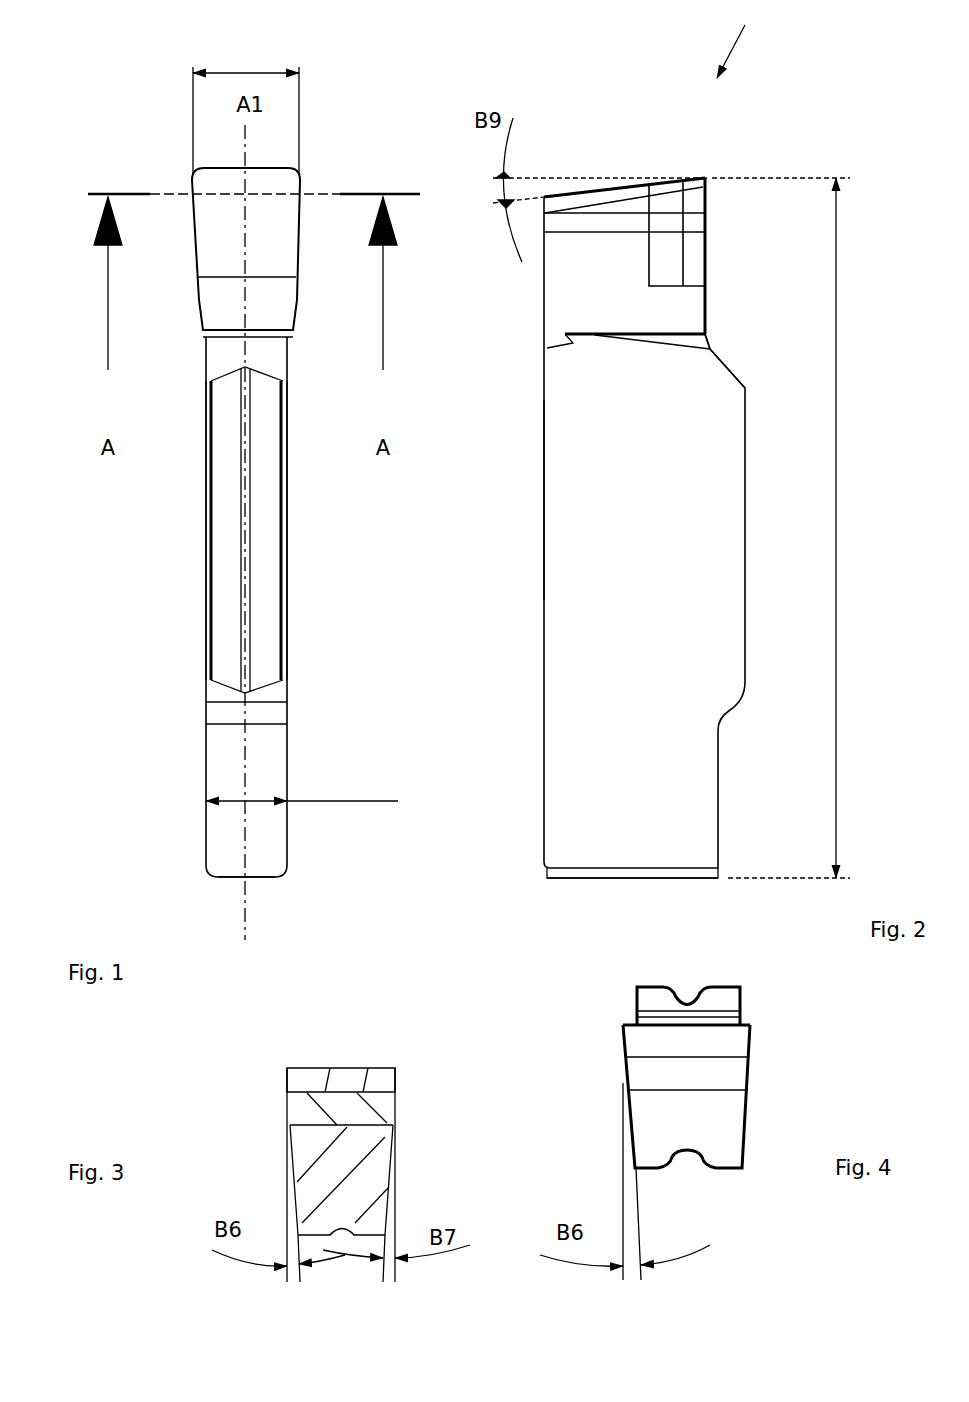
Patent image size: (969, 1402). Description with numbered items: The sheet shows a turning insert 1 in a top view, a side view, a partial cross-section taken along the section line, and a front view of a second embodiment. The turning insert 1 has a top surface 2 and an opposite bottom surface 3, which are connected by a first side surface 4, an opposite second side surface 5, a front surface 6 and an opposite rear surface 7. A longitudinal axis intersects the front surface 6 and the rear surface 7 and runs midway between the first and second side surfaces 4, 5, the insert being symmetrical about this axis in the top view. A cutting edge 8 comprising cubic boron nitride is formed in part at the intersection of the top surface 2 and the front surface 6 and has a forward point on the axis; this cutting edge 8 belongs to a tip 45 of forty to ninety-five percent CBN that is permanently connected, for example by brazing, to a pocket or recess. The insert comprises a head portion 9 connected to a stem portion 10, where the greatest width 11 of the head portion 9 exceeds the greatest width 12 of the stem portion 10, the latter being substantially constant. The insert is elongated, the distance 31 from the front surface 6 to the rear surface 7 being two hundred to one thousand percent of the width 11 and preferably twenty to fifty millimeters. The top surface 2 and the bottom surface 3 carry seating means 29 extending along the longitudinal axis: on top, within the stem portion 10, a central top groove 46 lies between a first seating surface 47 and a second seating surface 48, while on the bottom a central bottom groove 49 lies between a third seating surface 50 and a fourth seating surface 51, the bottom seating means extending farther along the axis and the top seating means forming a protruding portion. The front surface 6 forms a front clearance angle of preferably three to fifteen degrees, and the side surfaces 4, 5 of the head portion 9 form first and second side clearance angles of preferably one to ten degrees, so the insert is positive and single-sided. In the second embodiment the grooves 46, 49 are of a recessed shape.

In FIG. 1, the turning insert 1 is at (130, 130).
In FIG. 1, the top surface 2 is at (248, 607).
In FIG. 2, the top surface 2 is at (745, 533).
In FIG. 4, the top surface 2 is at (708, 965).
In FIG. 2, the bottom surface 3 is at (543, 494).
In FIG. 4, the bottom surface 3 is at (727, 1225).
In FIG. 1, the first side surface 4 is at (288, 521).
In FIG. 3, the first side surface 4 is at (288, 1132).
In FIG. 4, the first side surface 4 is at (625, 1063).
In FIG. 1, the second side surface 5 is at (203, 563).
In FIG. 2, the second side surface 5 is at (591, 500).
In FIG. 3, the second side surface 5 is at (395, 1142).
In FIG. 4, the second side surface 5 is at (750, 1062).
In FIG. 2, the front surface 6 is at (621, 187).
In FIG. 4, the front surface 6 is at (686, 1096).
In FIG. 1, the rear surface 7 is at (230, 877).
In FIG. 2, the rear surface 7 is at (580, 877).
In FIG. 1, the cutting edge 8 is at (225, 168).
In FIG. 2, the cutting edge 8 is at (706, 178).
In FIG. 4, the cutting edge 8 is at (660, 1025).
In FIG. 1, the head portion 9 is at (228, 255).
In FIG. 2, the head portion 9 is at (597, 284).
In FIG. 1, the stem portion 10 is at (224, 443).
In FIG. 2, the stem portion 10 is at (618, 441).
In FIG. 1, the greatest width of the head portion 11 is at (246, 105).
In FIG. 1, the greatest width of the stem portion 12 is at (302, 783).
In FIG. 1, the seating means 29 is at (222, 652).
In FIG. 2, the distance from front surface to rear surface 31 is at (795, 528).
In FIG. 2, the tip 45 is at (694, 252).
In FIG. 3, the tip 45 is at (343, 1076).
In FIG. 1, the central top groove 46 is at (248, 462).
In FIG. 4, the central top groove 46 is at (686, 1000).
In FIG. 1, the first seating surface 47 is at (265, 600).
In FIG. 4, the first seating surface 47 is at (652, 985).
In FIG. 1, the second seating surface 48 is at (228, 601).
In FIG. 4, the second seating surface 48 is at (725, 983).
In FIG. 3, the central bottom groove 49 is at (342, 1225).
In FIG. 4, the central bottom groove 49 is at (688, 1152).
In FIG. 3, the third seating surface 50 is at (318, 1235).
In FIG. 4, the third seating surface 50 is at (653, 1170).
In FIG. 3, the fourth seating surface 51 is at (366, 1235).
In FIG. 4, the fourth seating surface 51 is at (728, 1170).